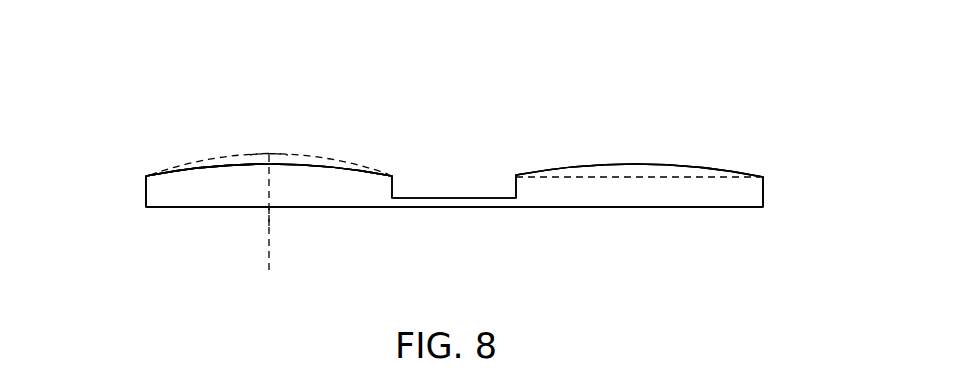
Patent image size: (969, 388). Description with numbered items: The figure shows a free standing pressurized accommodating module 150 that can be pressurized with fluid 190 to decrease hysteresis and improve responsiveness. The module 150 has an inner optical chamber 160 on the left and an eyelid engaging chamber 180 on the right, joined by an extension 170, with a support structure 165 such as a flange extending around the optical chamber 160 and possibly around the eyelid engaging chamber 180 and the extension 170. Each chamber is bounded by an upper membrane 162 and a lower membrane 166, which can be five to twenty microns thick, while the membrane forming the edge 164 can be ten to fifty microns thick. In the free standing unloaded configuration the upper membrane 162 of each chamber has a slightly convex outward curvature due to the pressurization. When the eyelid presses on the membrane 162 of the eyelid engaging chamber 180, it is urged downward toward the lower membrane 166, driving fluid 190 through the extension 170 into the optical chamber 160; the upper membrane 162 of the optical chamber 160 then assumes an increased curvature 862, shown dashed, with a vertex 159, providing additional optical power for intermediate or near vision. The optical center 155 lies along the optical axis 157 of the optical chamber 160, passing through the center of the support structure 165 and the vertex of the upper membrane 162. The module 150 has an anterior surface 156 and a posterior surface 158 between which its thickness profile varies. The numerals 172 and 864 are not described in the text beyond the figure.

The module 150 is at (478, 82).
The anterior surface 156 is at (158, 148).
The optical chamber 160 is at (235, 181).
The increased curvature 862 is at (272, 156).
The vertex 159 is at (267, 156).
The upper membrane 162 is at (323, 163).
The optical center 155 is at (275, 168).
The support structure 165 is at (146, 183).
The edge 164 is at (146, 193).
The fluid 190 is at (196, 201).
The lower membrane 166 is at (343, 208).
The extension 170 is at (434, 197).
The extension flange location 172 is at (472, 208).
The optical axis 157 is at (272, 258).
The posterior surface 158 is at (248, 222).
The planar surface profile 864 is at (663, 176).
The eyelid engaging chamber 180 is at (705, 190).